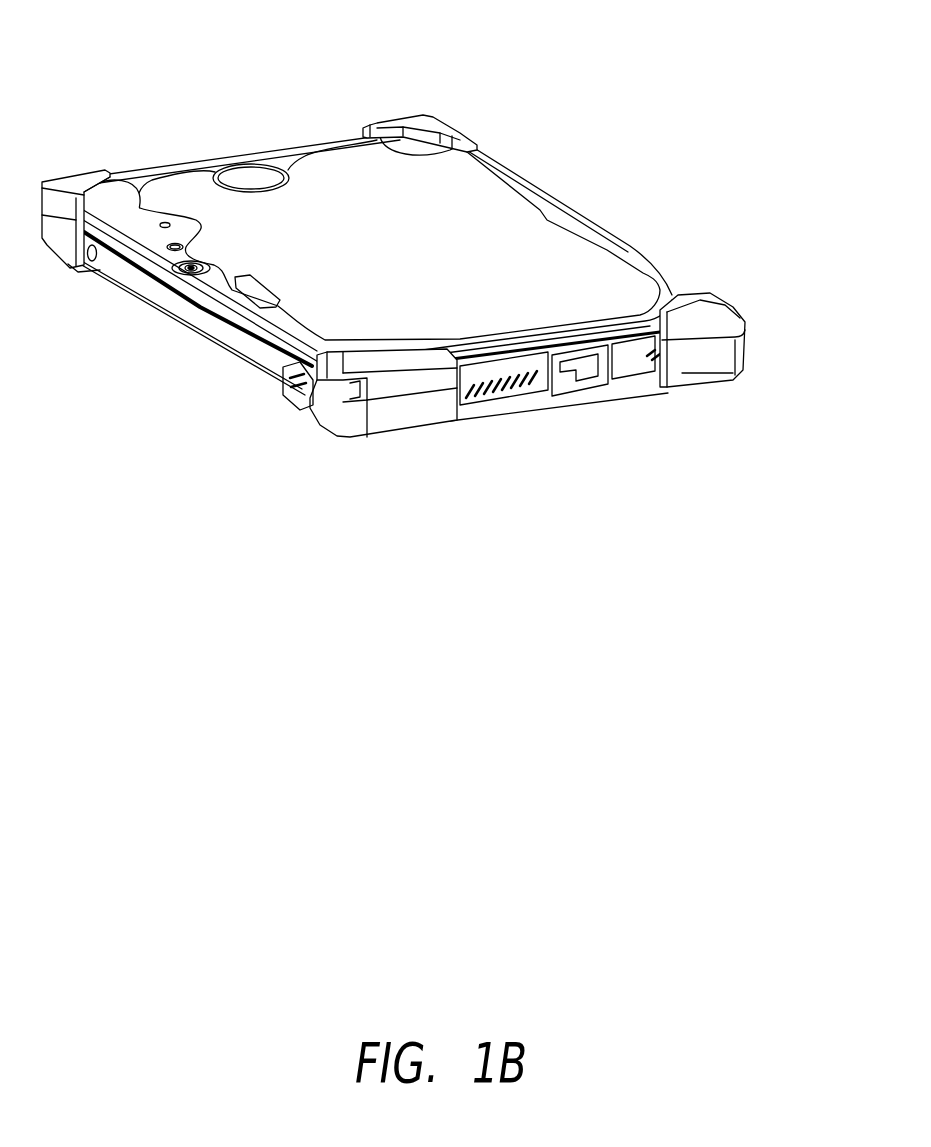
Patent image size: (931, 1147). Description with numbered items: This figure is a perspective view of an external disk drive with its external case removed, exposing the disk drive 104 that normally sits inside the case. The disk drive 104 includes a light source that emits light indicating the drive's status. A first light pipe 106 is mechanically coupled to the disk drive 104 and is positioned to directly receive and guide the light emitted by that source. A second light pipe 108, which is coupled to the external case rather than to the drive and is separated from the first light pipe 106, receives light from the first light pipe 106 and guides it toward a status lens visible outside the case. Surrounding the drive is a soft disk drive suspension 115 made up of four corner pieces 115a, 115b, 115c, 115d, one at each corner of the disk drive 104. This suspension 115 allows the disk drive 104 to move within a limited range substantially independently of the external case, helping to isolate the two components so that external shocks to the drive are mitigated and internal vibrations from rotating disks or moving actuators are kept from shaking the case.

The disk drive 104 is at (584, 208).
The first light pipe 106 is at (363, 410).
The second light pipe 108 is at (304, 420).
The soft disk drive suspension 115 is at (753, 294).
The corner piece 115a is at (74, 168).
The corner piece 115b is at (398, 112).
The corner piece 115c is at (736, 389).
The corner piece 115d is at (395, 441).